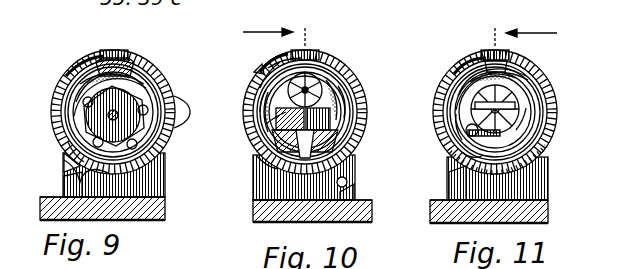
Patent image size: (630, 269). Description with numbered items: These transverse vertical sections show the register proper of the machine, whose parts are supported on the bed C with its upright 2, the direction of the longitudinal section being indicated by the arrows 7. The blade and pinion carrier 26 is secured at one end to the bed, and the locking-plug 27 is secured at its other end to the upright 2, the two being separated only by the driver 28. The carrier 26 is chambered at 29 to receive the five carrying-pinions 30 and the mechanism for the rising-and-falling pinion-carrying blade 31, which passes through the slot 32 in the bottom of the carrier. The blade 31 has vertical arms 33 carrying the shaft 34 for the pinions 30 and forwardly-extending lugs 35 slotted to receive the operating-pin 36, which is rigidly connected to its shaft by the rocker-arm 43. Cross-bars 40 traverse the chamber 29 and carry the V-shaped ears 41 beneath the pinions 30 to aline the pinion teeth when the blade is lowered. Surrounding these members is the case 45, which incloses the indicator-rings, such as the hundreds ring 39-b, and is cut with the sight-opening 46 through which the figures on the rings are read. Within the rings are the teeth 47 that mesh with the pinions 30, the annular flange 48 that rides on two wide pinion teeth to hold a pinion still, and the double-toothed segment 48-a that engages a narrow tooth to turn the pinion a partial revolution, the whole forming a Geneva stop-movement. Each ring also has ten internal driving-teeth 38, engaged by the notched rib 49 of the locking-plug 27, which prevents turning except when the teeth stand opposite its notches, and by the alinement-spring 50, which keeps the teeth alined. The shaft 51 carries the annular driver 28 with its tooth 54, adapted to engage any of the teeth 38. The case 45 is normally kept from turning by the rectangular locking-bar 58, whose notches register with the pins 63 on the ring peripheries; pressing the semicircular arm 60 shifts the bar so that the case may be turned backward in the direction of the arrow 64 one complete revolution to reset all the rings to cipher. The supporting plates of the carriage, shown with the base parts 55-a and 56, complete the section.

In FIG. 9, the upright 2 is at (162, 170).
In FIG. 10, the upright 2 is at (256, 180).
In FIG. 11, the upright 2 is at (550, 200).
In FIG. 10, the arrows 7 is at (274, 29).
In FIG. 11, the arrows 7 is at (526, 31).
In FIG. 10, the blade and pinion carrier 26 is at (360, 144).
In FIG. 11, the blade and pinion carrier 26 is at (556, 112).
In FIG. 9, the locking-plug 27 is at (160, 136).
In FIG. 11, the locking-plug 27 is at (552, 174).
In FIG. 11, the driver 28 is at (540, 102).
In FIG. 10, the chamber 29 is at (362, 130).
In FIG. 11, the chamber 29 is at (556, 126).
In FIG. 10, the carrying-pinions 30 is at (348, 80).
In FIG. 11, the carrying-pinions 30 is at (548, 78).
In FIG. 10, the pinion-carrying blade 31 is at (362, 162).
In FIG. 11, the pinion-carrying blade 31 is at (460, 118).
In FIG. 10, the slot 32 is at (262, 152).
In FIG. 10, the vertical arms 33 is at (357, 106).
In FIG. 11, the vertical arms 33 is at (456, 104).
In FIG. 10, the shaft 34 is at (288, 62).
In FIG. 11, the shaft 34 is at (548, 90).
In FIG. 10, the forwardly-extending lugs 35 is at (262, 122).
In FIG. 11, the forwardly-extending lugs 35 is at (556, 142).
In FIG. 10, the operating-pin 36 is at (252, 84).
In FIG. 11, the operating-pin 36 is at (556, 160).
In FIG. 9, the internal driving-teeth 38 is at (152, 92).
In FIG. 10, the internal driving-teeth 38 is at (262, 138).
In FIG. 11, the internal driving-teeth 38 is at (462, 92).
In FIG. 9, the indicator-ring 39-b is at (64, 118).
In FIG. 10, the indicator-ring 39-b is at (258, 106).
In FIG. 11, the cross-bars 40 is at (462, 134).
In FIG. 10, the V-shaped ears 41 is at (352, 120).
In FIG. 10, the rocker-arm 43 is at (256, 168).
In FIG. 9, the case 45 is at (150, 72).
In FIG. 10, the case 45 is at (334, 72).
In FIG. 11, the case 45 is at (522, 70).
In FIG. 9, the sight slot or opening 46 is at (108, 52).
In FIG. 10, the sight slot or opening 46 is at (308, 50).
In FIG. 11, the sight slot or opening 46 is at (494, 50).
In FIG. 10, the teeth 47 is at (352, 94).
In FIG. 9, the annular flange 48 is at (76, 86).
In FIG. 10, the annular flange 48 is at (358, 174).
In FIG. 11, the annular flange 48 is at (462, 76).
In FIG. 9, the double-toothed segment 48-a is at (88, 62).
In FIG. 10, the double-toothed segment 48-a is at (318, 58).
In FIG. 11, the double-toothed segment 48-a is at (472, 62).
In FIG. 9, the notched rib 49 is at (124, 64).
In FIG. 9, the alinement-spring 50 is at (66, 160).
In FIG. 9, the shaft 51 is at (54, 140).
In FIG. 11, the shaft 51 is at (456, 178).
In FIG. 11, the tooth 54 is at (497, 64).
In FIG. 9, the base plate 55-a is at (156, 220).
In FIG. 10, the base plate 55-a is at (360, 221).
In FIG. 11, the base plate 55-a is at (536, 222).
In FIG. 9, the support 56 is at (66, 190).
In FIG. 10, the support 56 is at (356, 198).
In FIG. 9, the locking-bar 58 is at (160, 186).
In FIG. 10, the locking-bar 58 is at (256, 198).
In FIG. 11, the locking-bar 58 is at (552, 186).
In FIG. 9, the semicircular arm 60 is at (177, 108).
In FIG. 9, the pins 63 is at (70, 170).
In FIG. 10, the pins 63 is at (348, 184).
In FIG. 11, the pins 63 is at (460, 158).
In FIG. 10, the arrow 64 is at (262, 60).
In FIG. 9, the bed C is at (46, 221).
In FIG. 10, the bed C is at (266, 223).
In FIG. 11, the bed C is at (442, 224).